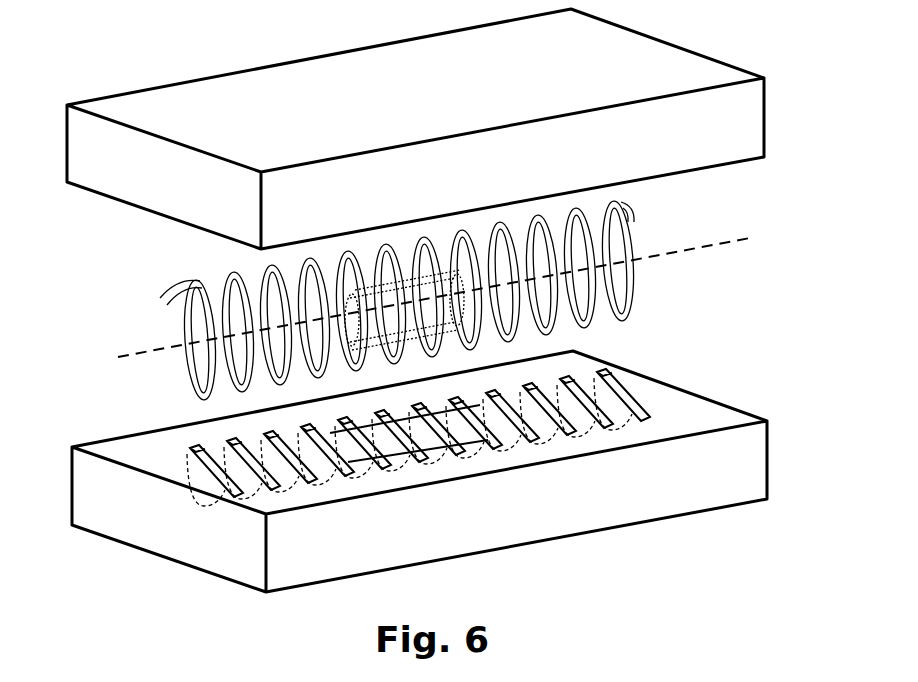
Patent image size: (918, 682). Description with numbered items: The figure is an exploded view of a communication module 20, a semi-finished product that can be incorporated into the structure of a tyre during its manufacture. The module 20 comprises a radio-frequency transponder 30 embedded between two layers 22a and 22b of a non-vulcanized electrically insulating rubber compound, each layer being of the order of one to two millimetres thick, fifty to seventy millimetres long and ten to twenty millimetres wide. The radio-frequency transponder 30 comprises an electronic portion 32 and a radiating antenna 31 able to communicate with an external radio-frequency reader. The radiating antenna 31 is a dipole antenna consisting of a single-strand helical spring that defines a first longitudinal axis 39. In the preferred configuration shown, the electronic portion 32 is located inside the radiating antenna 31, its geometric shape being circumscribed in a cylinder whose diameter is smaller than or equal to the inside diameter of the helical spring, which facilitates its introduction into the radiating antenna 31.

The communication module 20 is at (637, 27).
The layer of non-vulcanized electrically insulating rubber compound 22a is at (264, 126).
The layer of non-vulcanized electrically insulating rubber compound 22b is at (655, 502).
The radio-frequency transponder 30 is at (184, 278).
The radiating antenna 31 is at (634, 224).
The electronic portion 32 is at (470, 339).
The first longitudinal axis 39 is at (437, 297).